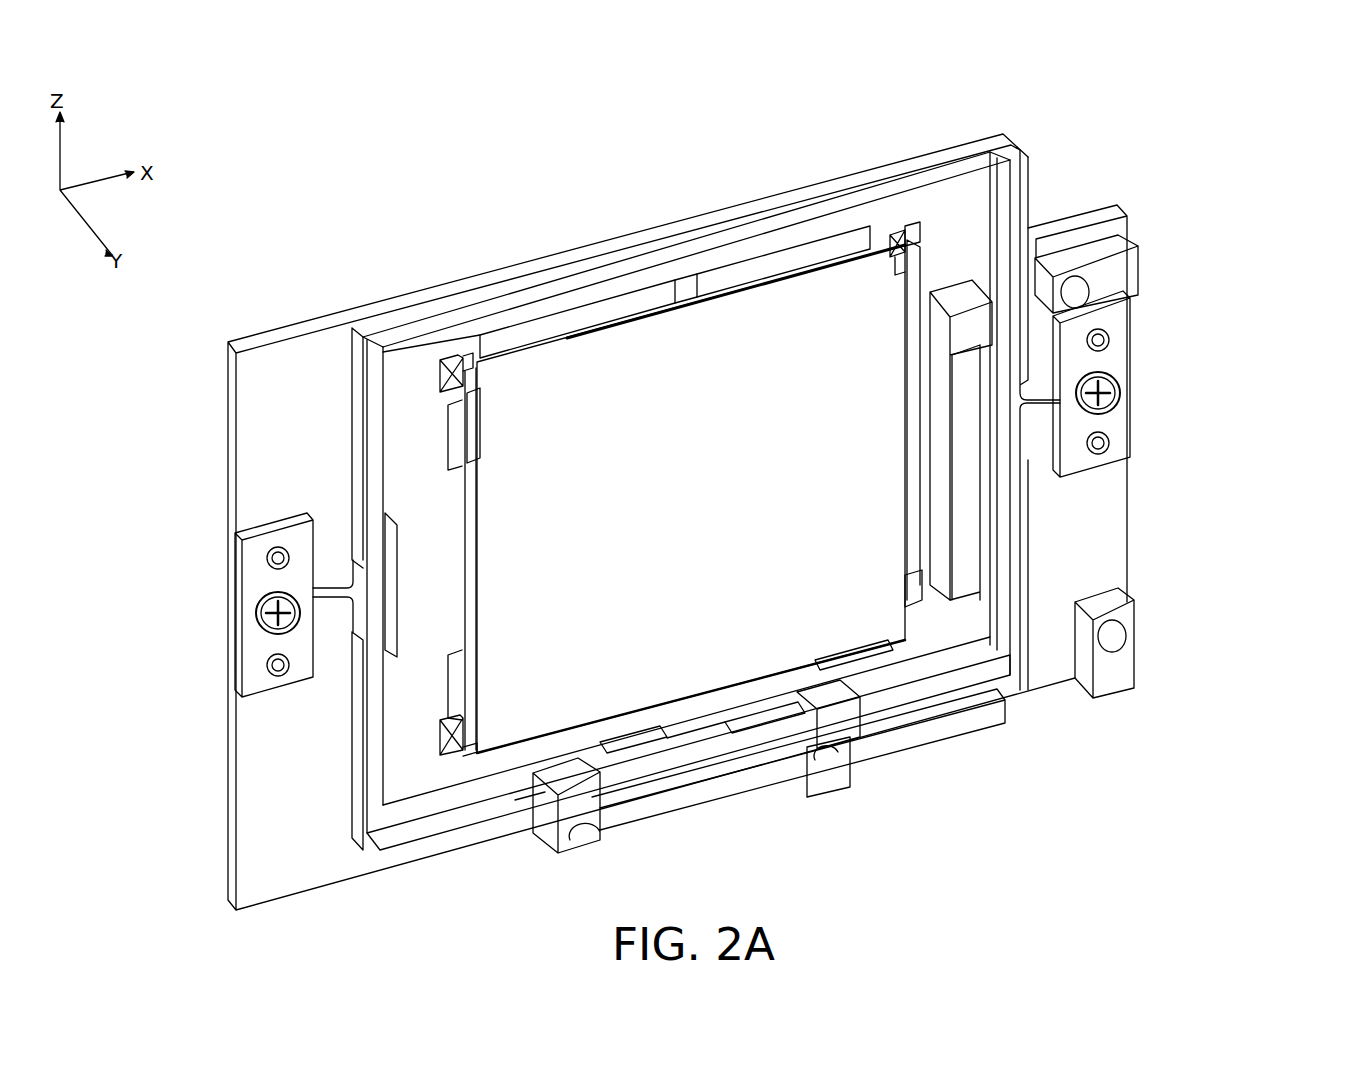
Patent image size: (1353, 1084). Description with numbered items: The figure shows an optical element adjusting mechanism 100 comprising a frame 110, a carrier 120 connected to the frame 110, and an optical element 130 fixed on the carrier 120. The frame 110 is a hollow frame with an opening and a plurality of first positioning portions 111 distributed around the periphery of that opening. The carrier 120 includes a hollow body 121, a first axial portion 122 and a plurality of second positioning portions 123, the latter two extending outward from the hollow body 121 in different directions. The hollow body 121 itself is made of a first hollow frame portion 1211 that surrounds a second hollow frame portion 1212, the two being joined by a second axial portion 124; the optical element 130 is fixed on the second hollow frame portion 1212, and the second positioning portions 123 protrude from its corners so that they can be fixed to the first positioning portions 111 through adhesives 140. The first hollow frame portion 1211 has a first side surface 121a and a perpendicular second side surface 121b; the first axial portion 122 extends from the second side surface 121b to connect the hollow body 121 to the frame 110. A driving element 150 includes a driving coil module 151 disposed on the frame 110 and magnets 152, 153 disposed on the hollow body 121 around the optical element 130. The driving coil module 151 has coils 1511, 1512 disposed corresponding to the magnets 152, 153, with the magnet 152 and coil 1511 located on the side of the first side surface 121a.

The optical element adjusting mechanism 100 is at (1305, 874).
The frame 110 is at (277, 358).
The first positioning portions 111 is at (467, 352).
The carrier 120 is at (338, 347).
The hollow body 121 is at (619, 477).
The first hollow frame portion 1211 is at (1005, 193).
The second hollow frame portion 1212 is at (468, 750).
The first side surface 121a is at (515, 807).
The second side surface 121b is at (352, 570).
The first axial portion 122 is at (335, 598).
The second positioning portions 123 is at (443, 390).
The second axial portion 124 is at (687, 280).
The optical element 130 is at (583, 373).
The adhesives 140 is at (445, 377).
The driving element 150 is at (740, 808).
The driving coil module 151 is at (969, 602).
The coil 1511 is at (773, 775).
The coil 1512 is at (960, 413).
The magnet 152 is at (817, 752).
The magnet 153 is at (940, 382).